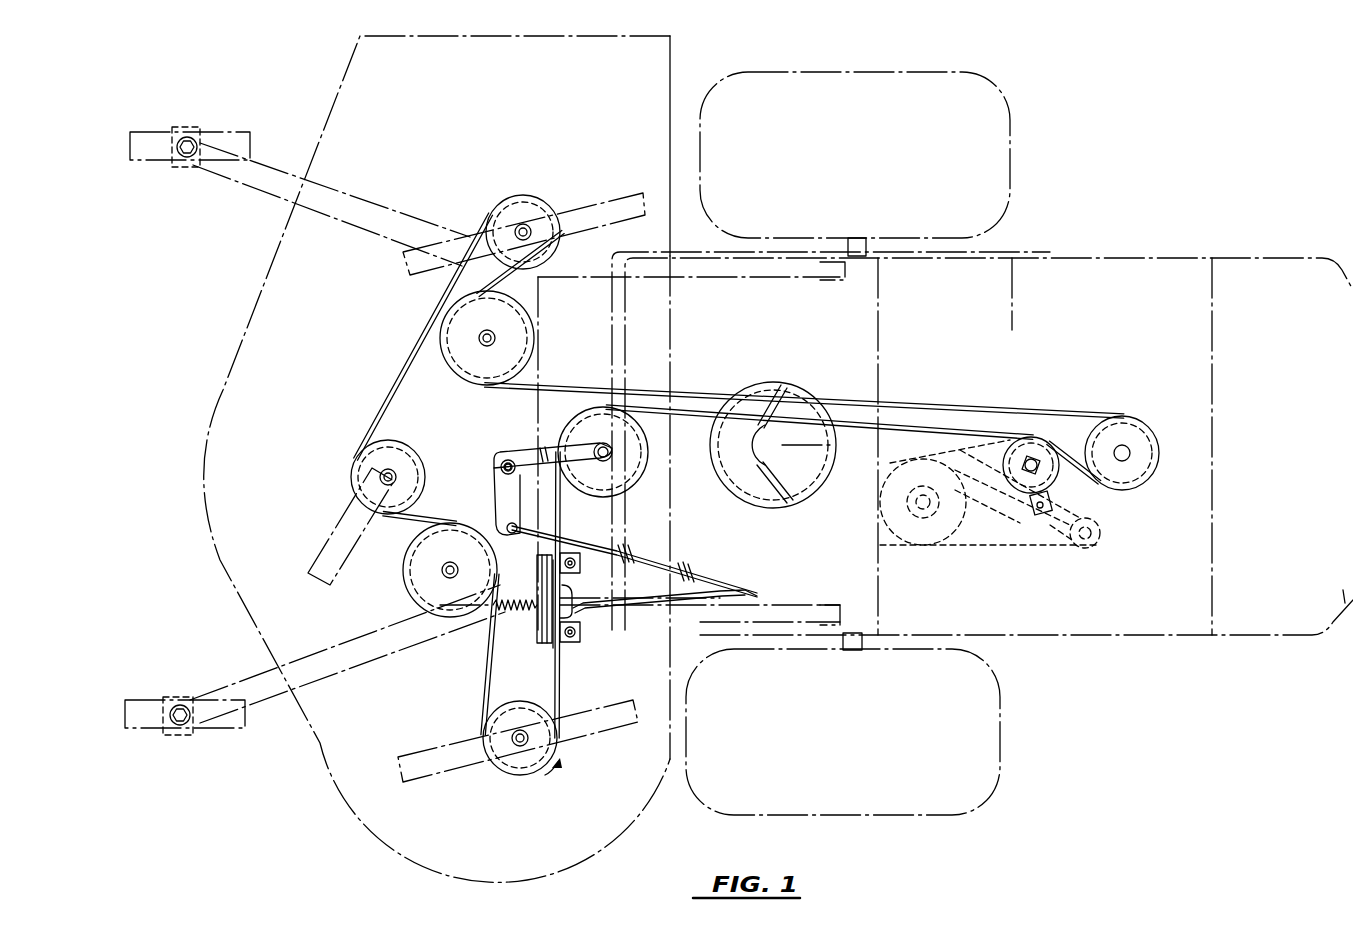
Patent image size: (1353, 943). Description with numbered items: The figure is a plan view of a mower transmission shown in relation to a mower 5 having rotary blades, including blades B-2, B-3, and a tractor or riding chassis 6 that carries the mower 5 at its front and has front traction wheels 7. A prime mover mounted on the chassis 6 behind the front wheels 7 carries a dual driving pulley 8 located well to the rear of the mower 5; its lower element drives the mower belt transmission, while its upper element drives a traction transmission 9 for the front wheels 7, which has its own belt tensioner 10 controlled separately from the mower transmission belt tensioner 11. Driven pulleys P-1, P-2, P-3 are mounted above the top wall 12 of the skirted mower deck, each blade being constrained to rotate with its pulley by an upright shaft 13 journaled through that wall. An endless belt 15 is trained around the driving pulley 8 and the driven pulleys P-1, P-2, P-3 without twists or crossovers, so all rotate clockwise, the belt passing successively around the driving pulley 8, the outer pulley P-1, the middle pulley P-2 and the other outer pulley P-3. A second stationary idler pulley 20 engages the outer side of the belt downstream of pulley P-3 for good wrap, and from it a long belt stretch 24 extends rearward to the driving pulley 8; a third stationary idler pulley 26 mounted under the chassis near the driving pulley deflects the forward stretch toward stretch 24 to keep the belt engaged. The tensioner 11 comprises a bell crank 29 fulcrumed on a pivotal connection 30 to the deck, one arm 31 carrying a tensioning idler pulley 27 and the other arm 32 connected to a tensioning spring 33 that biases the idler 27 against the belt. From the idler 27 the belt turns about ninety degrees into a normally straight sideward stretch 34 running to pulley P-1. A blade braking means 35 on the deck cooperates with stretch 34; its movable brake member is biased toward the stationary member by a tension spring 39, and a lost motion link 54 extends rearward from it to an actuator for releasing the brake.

The mower 5 is at (345, 55).
The tractor or riding chassis 6 is at (1080, 244).
The front traction wheels 7 is at (1012, 135).
The driving pulley 8 is at (1135, 420).
The traction transmission 9 is at (1130, 516).
The belt tensioner 10 is at (1022, 530).
The mower transmission belt tensioner 11 is at (494, 465).
The top wall of mower deck 12 is at (1080, 634).
The upright shaft 13 is at (515, 228).
The endless belt 15 is at (422, 335).
The second stationary idler pulley 20 is at (520, 322).
The belt stretch 24 is at (735, 402).
The third stationary idler pulley 26 is at (1040, 438).
The tensioning idler pulley 27 is at (590, 418).
The bent lever or bell crank 29 is at (492, 487).
The pivotal connection 30 is at (506, 458).
The arm of bell crank 31 is at (555, 446).
The other arm of bell crank 32 is at (500, 508).
The tensioning spring 33 is at (696, 570).
The straight belt stretch 34 is at (560, 524).
The blade braking means 35 is at (540, 647).
The tension spring 39 is at (505, 604).
The lost motion link 54 is at (765, 588).
The driven pulley P-1 is at (528, 770).
The middle driven pulley P-2 is at (362, 488).
The driven pulley P-3 is at (530, 206).
The rotary blade B-2 is at (328, 545).
The rotary blade B-3 is at (607, 190).